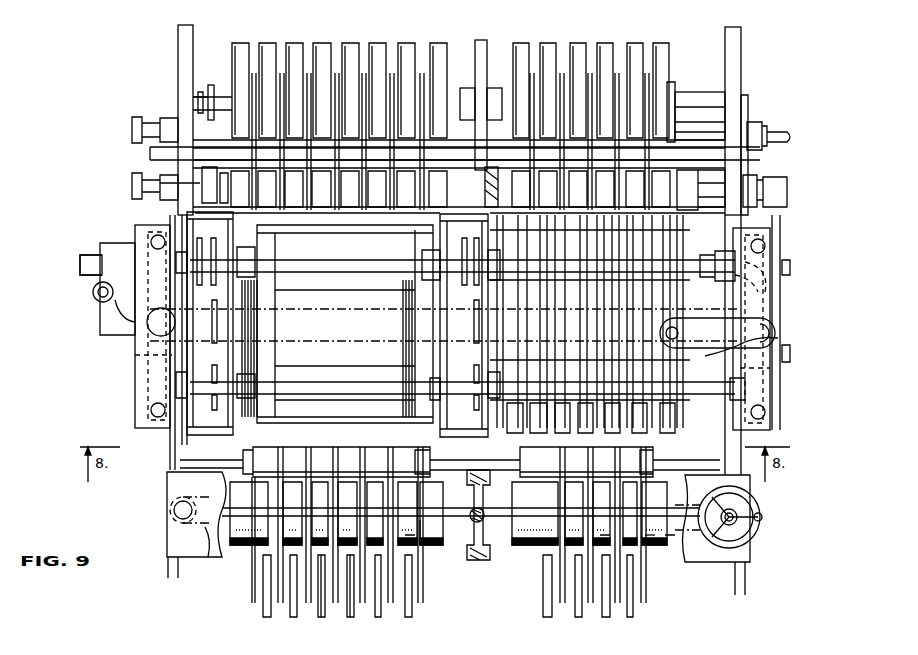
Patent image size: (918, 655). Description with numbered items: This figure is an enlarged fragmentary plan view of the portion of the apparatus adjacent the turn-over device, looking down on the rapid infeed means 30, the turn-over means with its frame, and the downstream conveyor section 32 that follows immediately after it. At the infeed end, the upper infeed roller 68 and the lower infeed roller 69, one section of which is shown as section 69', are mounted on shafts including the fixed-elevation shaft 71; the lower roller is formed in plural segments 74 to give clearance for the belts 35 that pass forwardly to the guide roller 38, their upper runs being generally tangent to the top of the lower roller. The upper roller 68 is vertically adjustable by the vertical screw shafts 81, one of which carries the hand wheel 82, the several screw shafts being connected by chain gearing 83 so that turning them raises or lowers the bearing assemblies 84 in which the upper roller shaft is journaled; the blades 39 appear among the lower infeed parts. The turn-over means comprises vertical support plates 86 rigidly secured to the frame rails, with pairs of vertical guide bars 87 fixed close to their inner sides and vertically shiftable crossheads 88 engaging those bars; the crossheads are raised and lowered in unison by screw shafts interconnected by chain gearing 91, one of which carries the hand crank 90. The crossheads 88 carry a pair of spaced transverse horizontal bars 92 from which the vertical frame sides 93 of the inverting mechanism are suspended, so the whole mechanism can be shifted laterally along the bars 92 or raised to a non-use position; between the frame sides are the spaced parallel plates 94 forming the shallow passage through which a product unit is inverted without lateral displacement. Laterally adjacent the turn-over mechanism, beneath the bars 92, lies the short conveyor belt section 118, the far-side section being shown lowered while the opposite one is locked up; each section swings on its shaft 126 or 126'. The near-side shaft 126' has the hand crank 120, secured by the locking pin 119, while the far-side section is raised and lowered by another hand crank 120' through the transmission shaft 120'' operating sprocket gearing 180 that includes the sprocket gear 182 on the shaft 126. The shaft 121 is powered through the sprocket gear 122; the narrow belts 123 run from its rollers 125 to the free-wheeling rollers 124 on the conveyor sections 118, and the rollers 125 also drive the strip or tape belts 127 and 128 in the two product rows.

The rapid infeed means 30 is at (175, 515).
The downstream conveyor section 32 is at (222, 48).
The belts 35 is at (372, 600).
The guide roller 38 is at (348, 458).
The lower blade 39 is at (290, 612).
The upper infeed roller 68 is at (425, 545).
The lower infeed roller 69 is at (552, 570).
The lower infeed roller section 69' is at (664, 553).
The shaft 71 is at (506, 506).
The roller segments 74 is at (400, 490).
The vertical screw shafts 81 is at (472, 521).
The hand wheel 82 is at (755, 500).
The chain gearing 83 is at (212, 554).
The bearing assemblies 84 is at (472, 500).
The vertical support plates 86 is at (135, 382).
The vertical guide bars 87 is at (151, 236).
The crossheads 88 is at (140, 356).
The hand crank 90 is at (742, 340).
The chain gearing 91 is at (358, 312).
The transverse horizontal bars 92 is at (687, 256).
The vertical frame sides 93 is at (230, 358).
The spaced parallel plates 94 is at (317, 294).
The conveyor belt section 118 is at (660, 190).
The locking pin 119 is at (745, 285).
The hand crank 120 is at (741, 351).
The hand crank 120' is at (768, 122).
The transmission shaft 120'' is at (714, 148).
The shaft 121 is at (220, 96).
The sprocket gear 122 is at (200, 95).
The belts 123 is at (275, 153).
The rollers 124 is at (622, 172).
The rollers 125 is at (458, 68).
The shaft 126 is at (151, 199).
The shaft 126' is at (732, 196).
The strip or tape belts 127 is at (348, 48).
The strip or tape belts 128 is at (600, 38).
The sprocket gearing 180 is at (132, 130).
The sprocket gear 182 is at (132, 178).